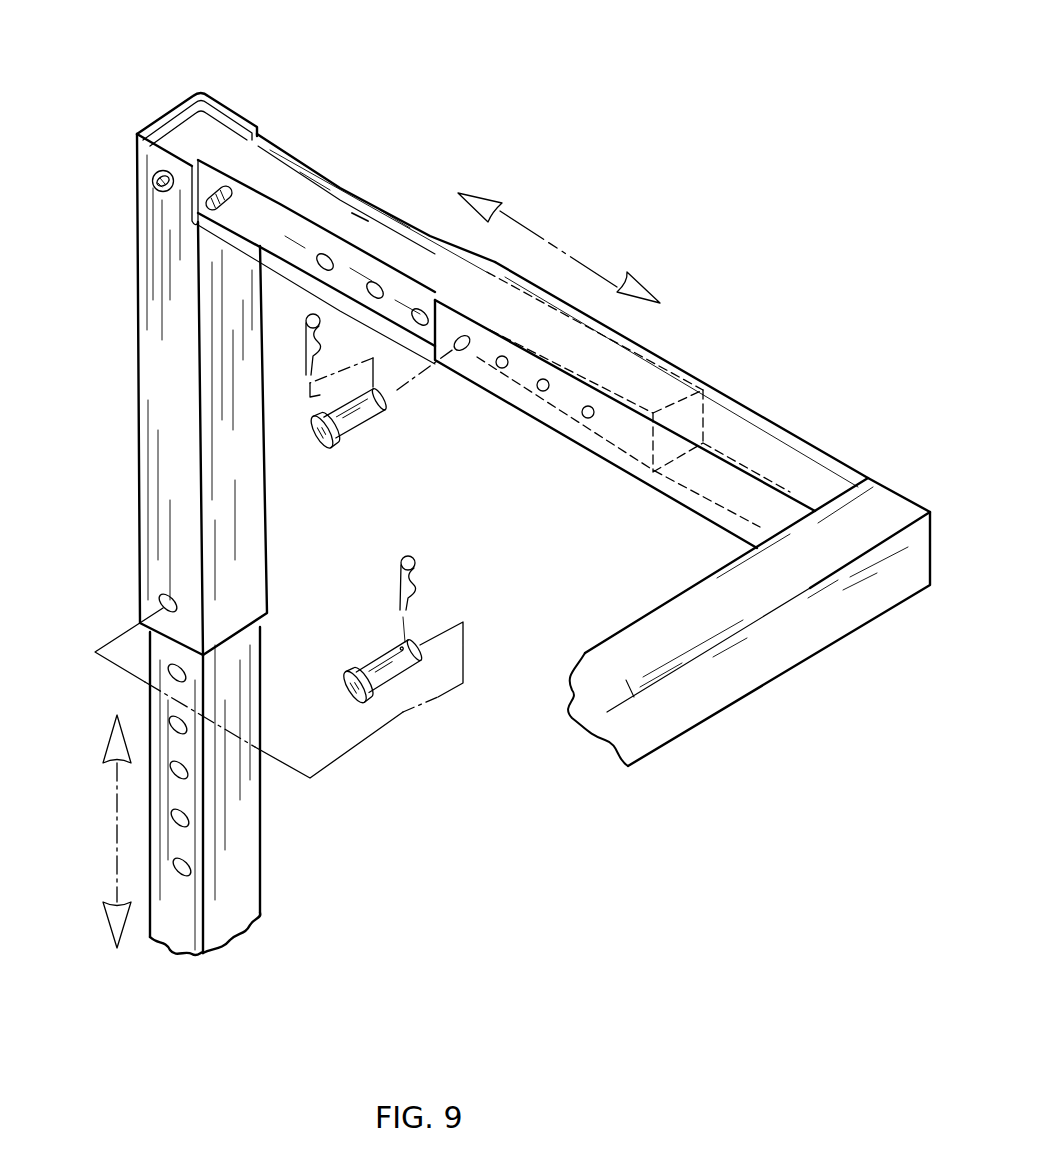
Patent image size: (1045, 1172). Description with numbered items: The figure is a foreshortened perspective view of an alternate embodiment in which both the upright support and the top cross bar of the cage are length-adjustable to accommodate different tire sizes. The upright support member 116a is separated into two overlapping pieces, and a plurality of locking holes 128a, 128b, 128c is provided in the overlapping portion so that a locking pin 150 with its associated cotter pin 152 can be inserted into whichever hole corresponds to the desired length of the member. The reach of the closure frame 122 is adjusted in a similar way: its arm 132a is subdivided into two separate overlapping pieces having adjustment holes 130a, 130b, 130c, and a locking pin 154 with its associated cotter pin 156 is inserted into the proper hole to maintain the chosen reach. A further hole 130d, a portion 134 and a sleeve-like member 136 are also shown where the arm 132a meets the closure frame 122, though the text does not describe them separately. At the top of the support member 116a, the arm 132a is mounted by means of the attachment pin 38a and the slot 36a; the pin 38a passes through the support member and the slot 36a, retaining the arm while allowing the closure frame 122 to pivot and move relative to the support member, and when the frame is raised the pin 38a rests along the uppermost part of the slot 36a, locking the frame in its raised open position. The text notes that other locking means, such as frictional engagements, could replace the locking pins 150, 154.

The slot 36a is at (224, 190).
The attachment pin 38a is at (152, 175).
The support member 116a is at (130, 490).
The closure frame 122 is at (778, 703).
The locking hole 128a is at (158, 603).
The locking hole 128b is at (166, 671).
The locking hole 128c is at (170, 719).
The adjustment hole 130a is at (326, 253).
The adjustment hole 130b is at (378, 282).
The adjustment hole 130c is at (426, 308).
The sleeve hole 130d is at (462, 352).
The arm 132a is at (702, 327).
The weld 134 is at (361, 216).
The sleeve 136 is at (697, 487).
The locking pin 150 is at (392, 670).
The cotter pin 152 is at (413, 556).
The locking pin 154 is at (358, 417).
The cotter pin 156 is at (304, 350).